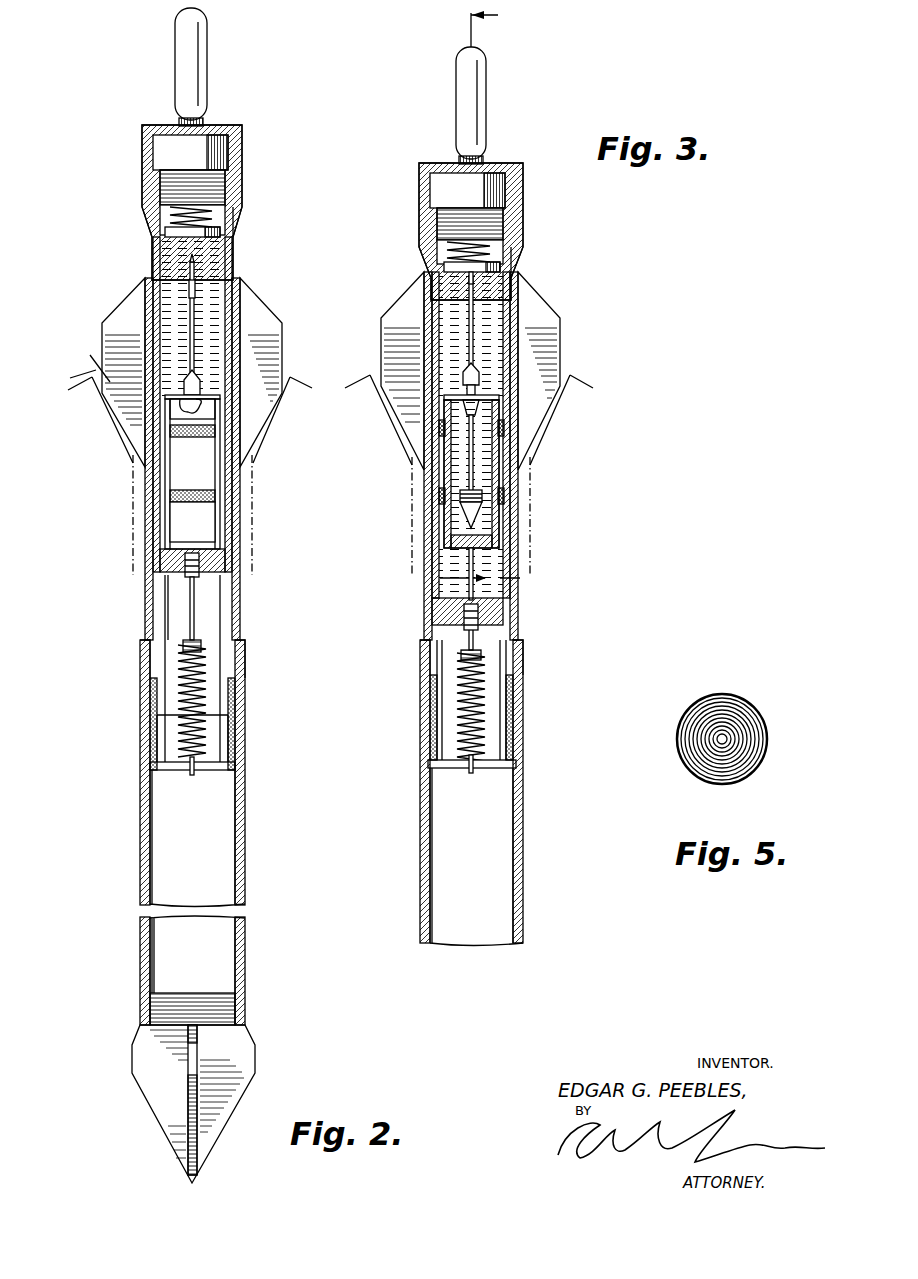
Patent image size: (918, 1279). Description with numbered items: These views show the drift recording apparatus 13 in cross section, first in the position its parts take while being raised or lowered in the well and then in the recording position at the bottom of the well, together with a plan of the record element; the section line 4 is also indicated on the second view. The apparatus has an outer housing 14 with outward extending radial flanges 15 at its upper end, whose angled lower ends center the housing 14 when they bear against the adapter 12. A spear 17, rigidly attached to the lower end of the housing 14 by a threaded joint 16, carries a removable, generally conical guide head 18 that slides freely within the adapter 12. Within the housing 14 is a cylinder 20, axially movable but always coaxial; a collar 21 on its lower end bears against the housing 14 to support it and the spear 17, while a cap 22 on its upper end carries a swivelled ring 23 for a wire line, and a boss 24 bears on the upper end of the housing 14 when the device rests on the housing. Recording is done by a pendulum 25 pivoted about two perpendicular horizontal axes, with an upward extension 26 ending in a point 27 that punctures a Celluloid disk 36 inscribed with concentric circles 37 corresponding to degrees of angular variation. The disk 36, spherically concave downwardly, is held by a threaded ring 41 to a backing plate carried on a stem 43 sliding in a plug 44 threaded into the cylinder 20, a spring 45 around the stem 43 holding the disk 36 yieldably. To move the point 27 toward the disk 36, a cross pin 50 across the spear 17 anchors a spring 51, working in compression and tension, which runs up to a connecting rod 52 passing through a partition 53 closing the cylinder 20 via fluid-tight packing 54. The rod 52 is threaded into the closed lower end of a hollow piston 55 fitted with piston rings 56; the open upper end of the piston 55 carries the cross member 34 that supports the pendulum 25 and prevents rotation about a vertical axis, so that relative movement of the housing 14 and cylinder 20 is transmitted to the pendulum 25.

In FIG. 3, the section line 4 is at (492, 299).
In FIG. 2, the adapter 12 is at (90, 380).
In FIG. 2, the drift recording apparatus 13 is at (243, 353).
In FIG. 3, the drift recording apparatus 13 is at (523, 345).
In FIG. 2, the outer housing 14 is at (152, 520).
In FIG. 2, the radial flanges 15 is at (125, 298).
In FIG. 3, the radial flanges 15 is at (405, 308).
In FIG. 2, the threaded joint 16 is at (242, 648).
In FIG. 3, the threaded joint 16 is at (425, 660).
In FIG. 2, the spear 17 is at (145, 827).
In FIG. 3, the spear 17 is at (524, 843).
In FIG. 2, the guide head 18 is at (135, 1070).
In FIG. 2, the cylinder 20 is at (230, 268).
In FIG. 3, the cylinder 20 is at (508, 560).
In FIG. 2, the collar 21 is at (240, 697).
In FIG. 3, the collar 21 is at (432, 740).
In FIG. 2, the cap 22 is at (243, 150).
In FIG. 3, the cap 22 is at (420, 190).
In FIG. 2, the ring 23 is at (185, 62).
In FIG. 3, the ring 23 is at (460, 103).
In FIG. 2, the boss 24 is at (236, 230).
In FIG. 3, the boss 24 is at (518, 256).
In FIG. 2, the pendulum 25 is at (196, 292).
In FIG. 3, the pendulum 25 is at (462, 440).
In FIG. 2, the extension 26 is at (196, 342).
In FIG. 3, the extension 26 is at (475, 332).
In FIG. 2, the point 27 is at (192, 270).
In FIG. 3, the point 27 is at (490, 292).
In FIG. 2, the cross member 34 is at (165, 410).
In FIG. 3, the cross member 34 is at (488, 392).
In FIG. 5, the disk 36 is at (742, 700).
In FIG. 5, the concentric circles 37 is at (745, 730).
In FIG. 2, the threaded ring 41 is at (172, 235).
In FIG. 3, the threaded ring 41 is at (503, 268).
In FIG. 2, the stem 43 is at (198, 205).
In FIG. 3, the stem 43 is at (462, 246).
In FIG. 2, the plug 44 is at (165, 157).
In FIG. 3, the plug 44 is at (498, 192).
In FIG. 2, the spring 45 is at (172, 211).
In FIG. 3, the spring 45 is at (470, 262).
In FIG. 2, the cross pin 50 is at (237, 768).
In FIG. 3, the cross pin 50 is at (517, 766).
In FIG. 2, the spring 51 is at (202, 732).
In FIG. 3, the spring 51 is at (486, 700).
In FIG. 2, the connecting rod 52 is at (196, 610).
In FIG. 3, the connecting rod 52 is at (472, 572).
In FIG. 2, the partition 53 is at (222, 568).
In FIG. 3, the partition 53 is at (442, 610).
In FIG. 2, the packing 54 is at (184, 573).
In FIG. 3, the packing 54 is at (480, 615).
In FIG. 2, the hollow piston 55 is at (225, 522).
In FIG. 3, the hollow piston 55 is at (500, 536).
In FIG. 2, the piston rings 56 is at (170, 492).
In FIG. 3, the piston rings 56 is at (504, 494).